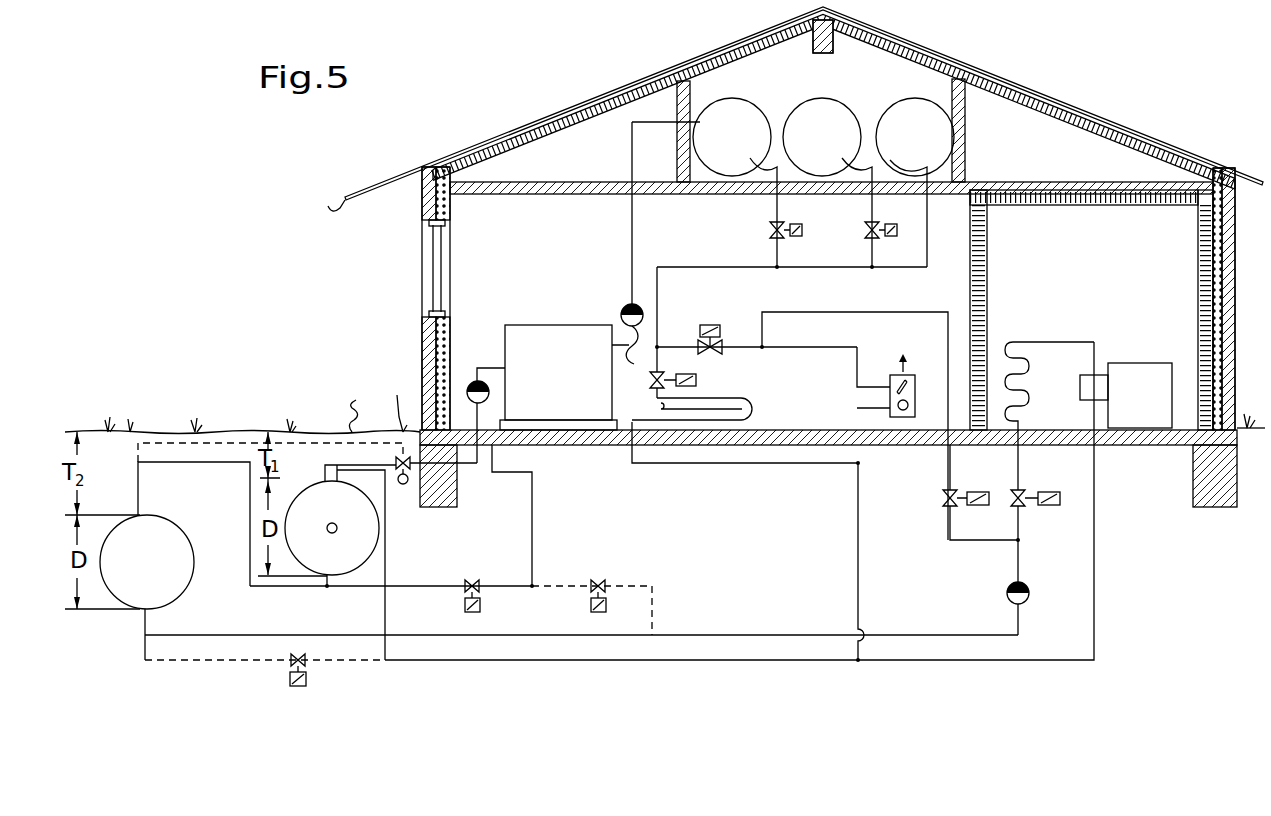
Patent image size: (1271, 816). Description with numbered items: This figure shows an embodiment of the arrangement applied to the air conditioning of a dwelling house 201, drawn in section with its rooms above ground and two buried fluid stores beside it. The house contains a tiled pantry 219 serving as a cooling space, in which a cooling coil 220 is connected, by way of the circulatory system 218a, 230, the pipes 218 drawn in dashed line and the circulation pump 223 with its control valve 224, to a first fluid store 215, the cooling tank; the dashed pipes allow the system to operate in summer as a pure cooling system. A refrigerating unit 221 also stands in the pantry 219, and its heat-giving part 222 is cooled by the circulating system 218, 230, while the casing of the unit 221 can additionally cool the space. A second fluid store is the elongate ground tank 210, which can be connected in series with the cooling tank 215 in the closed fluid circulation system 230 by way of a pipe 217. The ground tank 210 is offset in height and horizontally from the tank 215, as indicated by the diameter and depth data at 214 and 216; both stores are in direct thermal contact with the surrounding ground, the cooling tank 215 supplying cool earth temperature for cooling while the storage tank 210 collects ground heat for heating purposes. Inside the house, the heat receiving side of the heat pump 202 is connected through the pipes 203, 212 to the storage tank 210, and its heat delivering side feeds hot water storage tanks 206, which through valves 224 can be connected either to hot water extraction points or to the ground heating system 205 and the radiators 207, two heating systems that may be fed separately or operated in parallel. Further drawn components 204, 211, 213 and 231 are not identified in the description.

The dwelling house 201 is at (1067, 82).
The heat pump 202 is at (545, 324).
The pipe 203 is at (484, 368).
The valve 204 is at (656, 332).
The ground heating system 205 is at (730, 398).
The hot water storage tanks 206 is at (808, 113).
The radiators 207 is at (913, 372).
The ground tank 210 is at (370, 530).
The tank connection pipe 211 is at (333, 465).
The pipe 212 is at (537, 527).
The ground surface 213 is at (164, 430).
The diameter and depth data 214 is at (259, 457).
The first fluid store 215 is at (135, 593).
The diameter and depth data 216 is at (88, 474).
The pipe 217 is at (198, 462).
The pipes 218 is at (237, 638).
The circulatory system 218a is at (352, 662).
The tiled pantry 219 is at (970, 283).
The cooling coil 220 is at (1032, 342).
The refrigerating unit 221 is at (1141, 363).
The heat-giving part of the refrigerating unit 222 is at (1080, 385).
The circulation pump 223 is at (1030, 591).
The control valve 224 is at (767, 230).
The closed fluid circulation system 230 is at (997, 661).
The supply line 231 is at (862, 575).